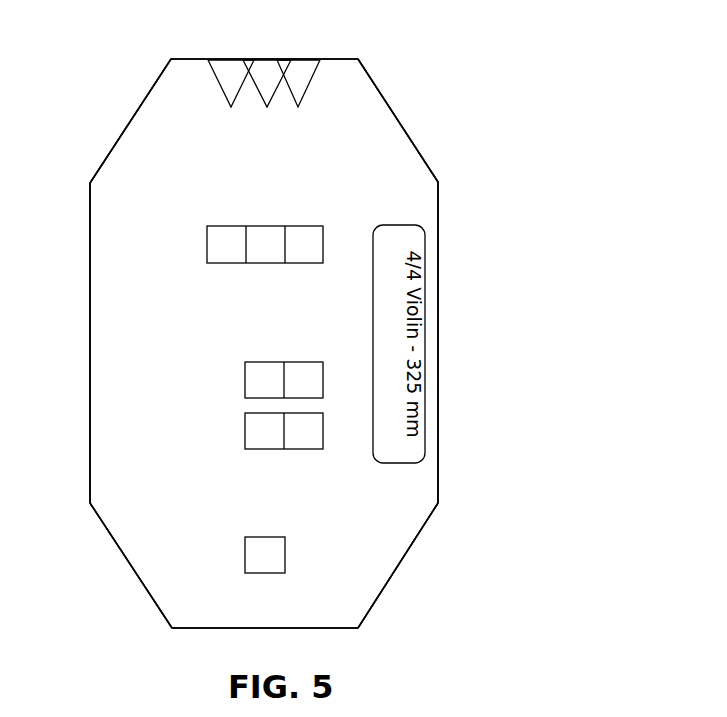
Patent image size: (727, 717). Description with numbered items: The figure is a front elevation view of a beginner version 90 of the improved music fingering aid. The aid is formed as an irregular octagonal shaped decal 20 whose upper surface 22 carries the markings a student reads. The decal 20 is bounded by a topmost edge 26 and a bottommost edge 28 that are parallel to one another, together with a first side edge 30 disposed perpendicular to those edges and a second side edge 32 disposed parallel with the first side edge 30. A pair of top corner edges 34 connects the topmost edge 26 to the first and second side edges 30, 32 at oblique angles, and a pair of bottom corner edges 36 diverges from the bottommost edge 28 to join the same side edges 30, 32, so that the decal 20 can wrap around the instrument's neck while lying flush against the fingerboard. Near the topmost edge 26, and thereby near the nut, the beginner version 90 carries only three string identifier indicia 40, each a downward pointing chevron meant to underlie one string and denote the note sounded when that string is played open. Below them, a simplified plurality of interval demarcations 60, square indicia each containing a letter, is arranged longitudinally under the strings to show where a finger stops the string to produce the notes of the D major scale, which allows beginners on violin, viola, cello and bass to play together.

The decal 20 is at (408, 167).
The upper surface 22 is at (287, 310).
The topmost edge 26 is at (186, 58).
The bottommost edge 28 is at (322, 630).
The first side edge 30 is at (90, 433).
The second side edge 32 is at (438, 336).
The top corner edges 34 is at (135, 125).
The bottom corner edges 36 is at (133, 570).
The string identifier indicia 40 is at (320, 55).
The interval demarcations 60 is at (245, 573).
The beginner version 90 is at (533, 72).